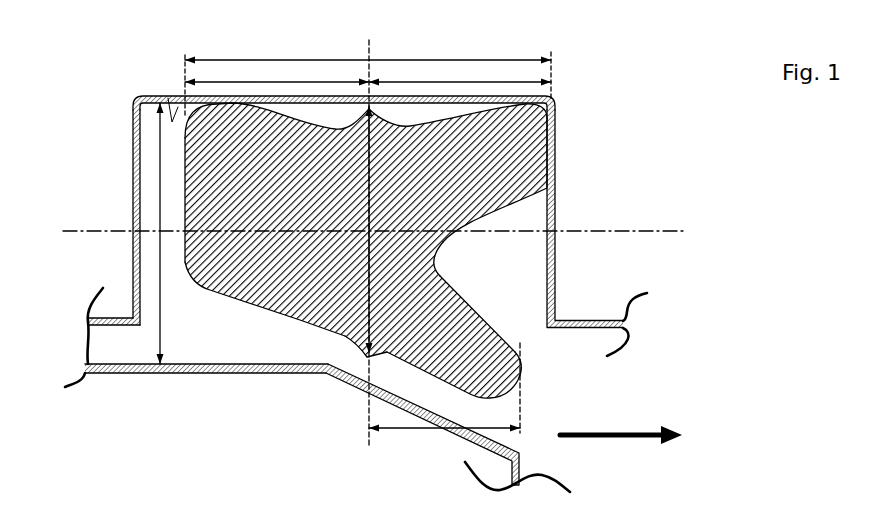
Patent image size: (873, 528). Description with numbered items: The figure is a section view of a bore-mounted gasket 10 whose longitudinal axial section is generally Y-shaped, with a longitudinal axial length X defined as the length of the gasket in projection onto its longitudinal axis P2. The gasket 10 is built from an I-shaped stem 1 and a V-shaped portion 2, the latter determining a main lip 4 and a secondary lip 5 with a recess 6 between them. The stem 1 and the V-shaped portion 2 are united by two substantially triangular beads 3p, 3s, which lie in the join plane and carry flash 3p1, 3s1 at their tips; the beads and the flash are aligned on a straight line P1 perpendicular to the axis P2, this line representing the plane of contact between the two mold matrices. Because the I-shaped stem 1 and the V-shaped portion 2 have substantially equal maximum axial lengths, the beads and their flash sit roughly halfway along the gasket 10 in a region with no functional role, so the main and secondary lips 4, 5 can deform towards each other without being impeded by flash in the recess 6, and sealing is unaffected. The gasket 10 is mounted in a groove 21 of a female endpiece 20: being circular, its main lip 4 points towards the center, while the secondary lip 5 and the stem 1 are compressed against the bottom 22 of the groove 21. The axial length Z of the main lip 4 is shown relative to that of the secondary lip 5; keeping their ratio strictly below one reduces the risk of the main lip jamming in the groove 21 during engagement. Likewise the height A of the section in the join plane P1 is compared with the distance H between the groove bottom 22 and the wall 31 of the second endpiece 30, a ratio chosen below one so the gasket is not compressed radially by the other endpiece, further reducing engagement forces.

The I-shaped stem 1 is at (273, 283).
The V-shaped portion 2 is at (455, 300).
The bead 3s is at (387, 116).
The flash 3s1 is at (373, 110).
The bead 3p is at (343, 341).
The flash 3p1 is at (362, 358).
The main lip 4 is at (444, 323).
The secondary lip 5 is at (510, 192).
The recess 6 is at (442, 263).
The gasket 10 is at (204, 370).
The female endpiece 20 is at (118, 318).
The groove 21 is at (133, 203).
The bottom of the groove 22 is at (168, 96).
The second endpiece 30 is at (123, 373).
The wall 31 is at (458, 440).
The longitudinal axial length X is at (287, 60).
The distance H is at (160, 152).
The longitudinal axial length of the main lip Z is at (436, 430).
The straight line P1 is at (374, 233).
The longitudinal axis P2 is at (394, 238).
The height of the section A is at (452, 289).